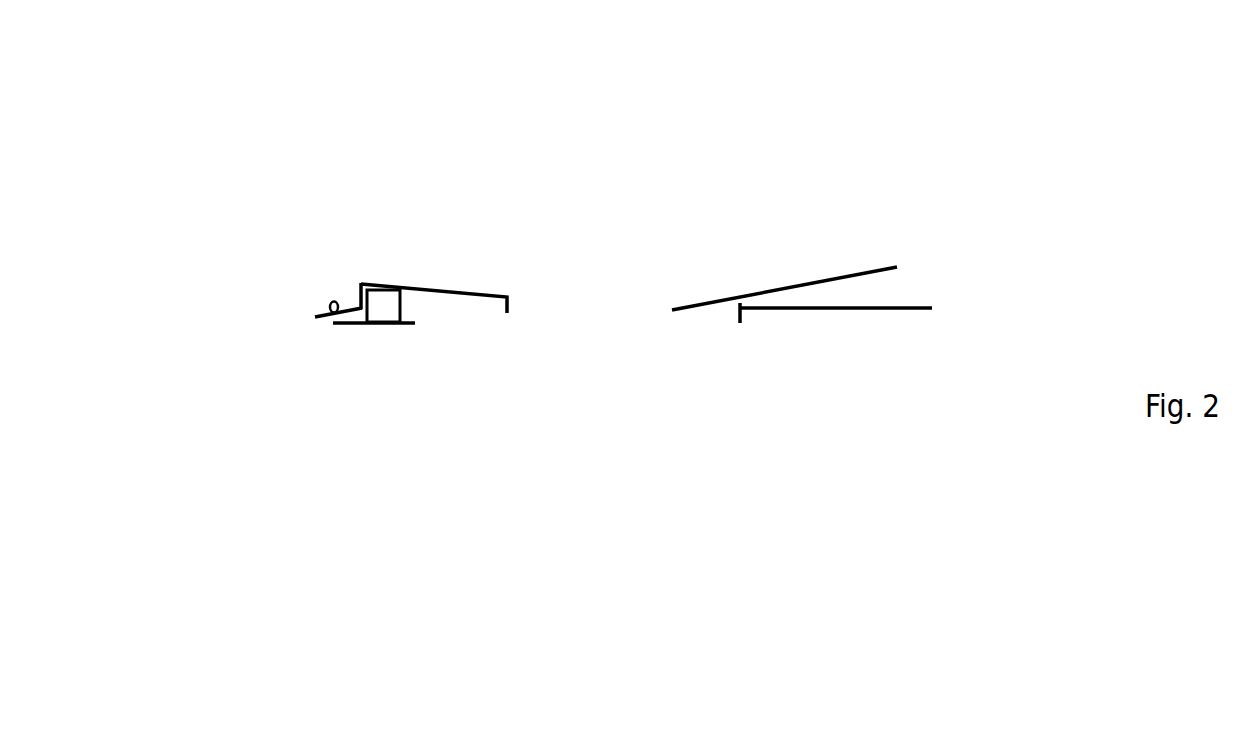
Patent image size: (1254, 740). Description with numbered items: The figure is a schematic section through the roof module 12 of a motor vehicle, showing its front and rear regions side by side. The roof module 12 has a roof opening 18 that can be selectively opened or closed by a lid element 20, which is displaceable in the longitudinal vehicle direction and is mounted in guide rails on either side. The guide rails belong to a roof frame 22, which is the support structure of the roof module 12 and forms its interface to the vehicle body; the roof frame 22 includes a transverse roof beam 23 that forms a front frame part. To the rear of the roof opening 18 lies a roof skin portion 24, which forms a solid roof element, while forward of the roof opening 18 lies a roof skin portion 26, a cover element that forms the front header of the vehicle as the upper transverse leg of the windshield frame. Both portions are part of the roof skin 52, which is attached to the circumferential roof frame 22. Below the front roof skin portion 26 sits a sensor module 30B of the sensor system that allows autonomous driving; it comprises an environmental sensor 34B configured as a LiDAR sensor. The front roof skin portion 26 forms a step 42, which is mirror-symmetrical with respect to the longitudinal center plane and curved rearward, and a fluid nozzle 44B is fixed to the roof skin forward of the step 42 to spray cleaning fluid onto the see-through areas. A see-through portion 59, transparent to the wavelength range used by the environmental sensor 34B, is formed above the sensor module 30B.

The roof module 12 is at (792, 224).
The roof opening 18 is at (740, 304).
The lid element 20 is at (804, 280).
The roof frame 22 is at (390, 366).
The transverse roof beam 23 is at (383, 324).
The roof skin portion 24 is at (918, 305).
The roof skin portion 26 is at (435, 290).
The sensor module 30B is at (461, 191).
The environmental sensor 34B is at (385, 305).
The step 42 is at (359, 284).
The fluid nozzle 44B is at (330, 305).
The roof skin 52 is at (710, 236).
The see-through portion 59 is at (358, 298).